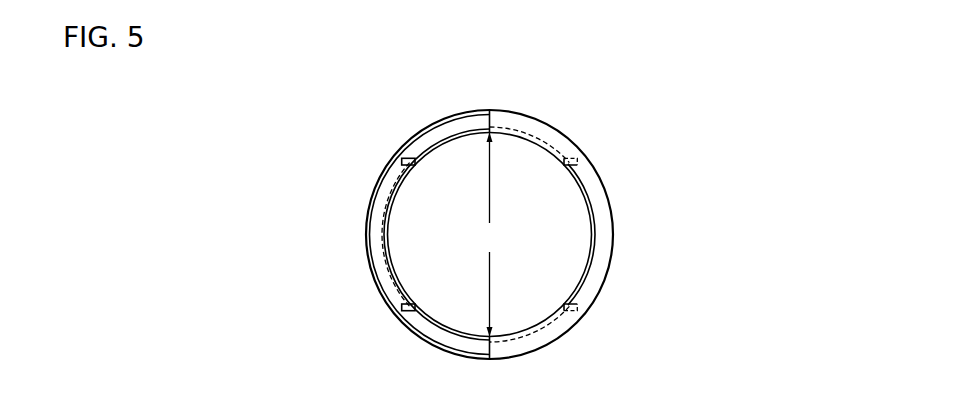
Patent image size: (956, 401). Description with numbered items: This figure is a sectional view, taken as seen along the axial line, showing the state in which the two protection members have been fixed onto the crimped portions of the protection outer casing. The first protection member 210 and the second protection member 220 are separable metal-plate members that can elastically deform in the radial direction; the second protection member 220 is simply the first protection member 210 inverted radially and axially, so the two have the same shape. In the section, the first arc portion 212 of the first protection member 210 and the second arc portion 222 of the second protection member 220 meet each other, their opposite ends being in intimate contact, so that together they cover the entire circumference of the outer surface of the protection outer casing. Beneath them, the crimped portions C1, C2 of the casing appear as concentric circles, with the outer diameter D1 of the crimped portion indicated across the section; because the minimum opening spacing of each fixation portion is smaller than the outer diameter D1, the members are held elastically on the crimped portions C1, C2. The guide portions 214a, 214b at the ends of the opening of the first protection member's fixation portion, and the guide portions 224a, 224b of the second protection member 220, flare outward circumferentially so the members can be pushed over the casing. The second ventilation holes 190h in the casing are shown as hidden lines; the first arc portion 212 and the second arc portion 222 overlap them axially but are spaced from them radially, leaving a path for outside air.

The second protection member 220 is at (692, 146).
The second arc portion 222 is at (616, 233).
The first protection member 210 is at (343, 199).
The first arc portion 212 is at (372, 278).
The second ventilation holes 190h is at (379, 235).
The guide portion 224a is at (413, 157).
The guide portion 224b is at (410, 311).
The guide portion 214a is at (572, 157).
The guide portion 214b is at (570, 309).
The outer diameter of the crimped portion D1 is at (491, 235).
The crimped portion C1 is at (588, 191).
The crimped portion C2 is at (588, 191).